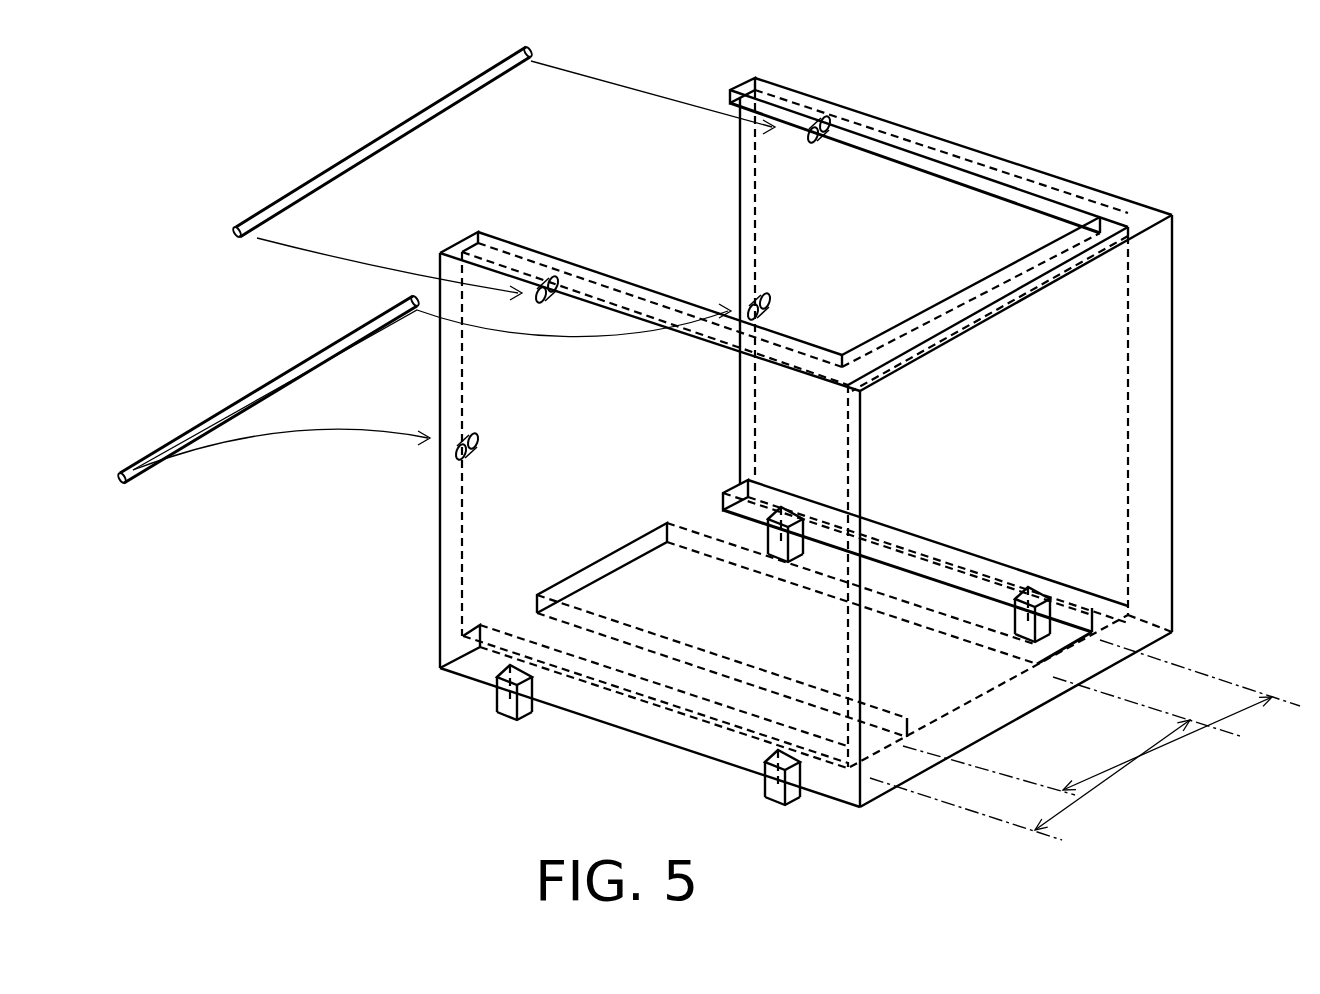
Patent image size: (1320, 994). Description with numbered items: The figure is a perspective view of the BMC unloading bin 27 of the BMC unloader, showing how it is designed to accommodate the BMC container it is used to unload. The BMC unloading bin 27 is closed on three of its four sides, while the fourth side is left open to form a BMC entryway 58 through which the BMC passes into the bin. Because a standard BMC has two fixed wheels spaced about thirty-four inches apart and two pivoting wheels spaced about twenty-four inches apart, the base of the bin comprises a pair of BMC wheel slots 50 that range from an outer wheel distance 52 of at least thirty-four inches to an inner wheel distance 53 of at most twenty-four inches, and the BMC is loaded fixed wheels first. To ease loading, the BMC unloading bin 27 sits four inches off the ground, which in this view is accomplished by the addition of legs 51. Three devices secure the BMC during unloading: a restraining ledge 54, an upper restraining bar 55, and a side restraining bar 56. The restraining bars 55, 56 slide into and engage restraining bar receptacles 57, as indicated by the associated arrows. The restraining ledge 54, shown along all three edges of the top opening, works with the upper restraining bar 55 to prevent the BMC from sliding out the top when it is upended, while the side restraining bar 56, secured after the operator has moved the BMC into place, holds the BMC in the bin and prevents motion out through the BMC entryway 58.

The BMC unloading bin 27 is at (1012, 92).
The BMC wheel slots 50 is at (730, 530).
The legs 51 is at (527, 687).
The outer wheel distance 52 is at (1178, 750).
The inner wheel distance 53 is at (1108, 767).
The restraining ledge 54 is at (935, 327).
The upper restraining bar 55 is at (377, 143).
The side restraining bar 56 is at (293, 370).
The restraining bar receptacles 57 is at (464, 437).
The BMC entryway 58 is at (580, 383).